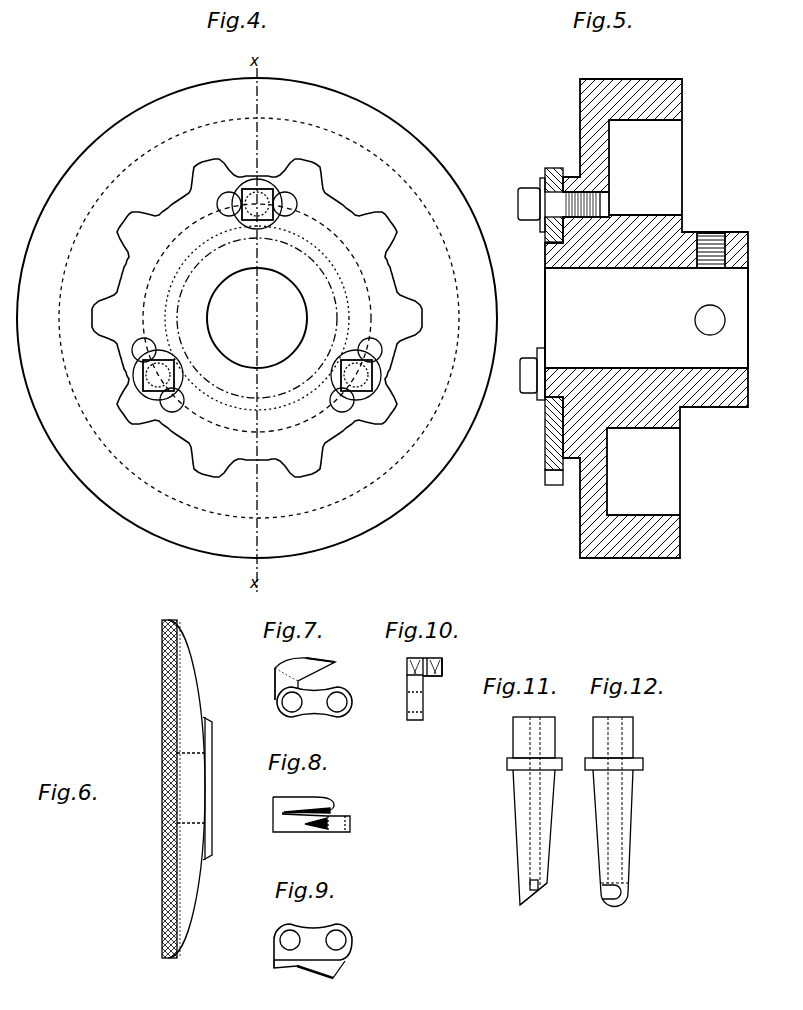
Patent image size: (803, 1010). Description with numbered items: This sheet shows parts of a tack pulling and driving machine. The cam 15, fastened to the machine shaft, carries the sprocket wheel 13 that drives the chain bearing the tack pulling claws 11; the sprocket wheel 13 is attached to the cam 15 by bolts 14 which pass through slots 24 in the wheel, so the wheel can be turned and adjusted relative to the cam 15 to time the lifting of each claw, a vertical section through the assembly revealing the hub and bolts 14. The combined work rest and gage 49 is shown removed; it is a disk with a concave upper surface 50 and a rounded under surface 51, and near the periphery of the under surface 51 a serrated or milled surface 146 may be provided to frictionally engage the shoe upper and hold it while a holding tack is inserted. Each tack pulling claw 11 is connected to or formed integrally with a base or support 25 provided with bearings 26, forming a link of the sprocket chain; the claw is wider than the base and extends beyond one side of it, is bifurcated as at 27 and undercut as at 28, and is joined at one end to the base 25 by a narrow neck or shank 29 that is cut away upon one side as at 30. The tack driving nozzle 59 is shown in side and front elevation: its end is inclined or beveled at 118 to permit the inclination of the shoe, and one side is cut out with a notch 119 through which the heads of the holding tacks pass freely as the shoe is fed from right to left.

In FIG. 7, the tack pulling claw 11 is at (312, 660).
In FIG. 8, the tack pulling claw 11 is at (310, 797).
In FIG. 9, the tack pulling claw 11 is at (309, 981).
In FIG. 10, the tack pulling claw 11 is at (440, 660).
In FIG. 4, the sprocket wheel 13 is at (257, 318).
In FIG. 5, the sprocket wheel 13 is at (545, 462).
In FIG. 4, the bolts 14 is at (143, 373).
In FIG. 5, the bolts 14 is at (520, 182).
In FIG. 4, the cam 15 is at (434, 168).
In FIG. 5, the cam 15 is at (620, 80).
In FIG. 4, the slots 24 is at (300, 203).
In FIG. 10, the slots 24 is at (407, 684).
In FIG. 7, the base or support 25 is at (338, 690).
In FIG. 8, the base or support 25 is at (350, 821).
In FIG. 9, the base or support 25 is at (314, 930).
In FIG. 10, the base or support 25 is at (417, 707).
In FIG. 7, the bearings 26 is at (283, 704).
In FIG. 9, the bearings 26 is at (280, 935).
In FIG. 10, the bearings 26 is at (423, 702).
In FIG. 8, the bifurcation 27 is at (333, 811).
In FIG. 10, the bifurcation 27 is at (425, 658).
In FIG. 7, the undercut 28 is at (336, 665).
In FIG. 9, the undercut 28 is at (343, 969).
In FIG. 10, the undercut 28 is at (442, 666).
In FIG. 7, the neck or shank 29 is at (275, 679).
In FIG. 9, the cut-away portion 30 is at (273, 961).
In FIG. 10, the cut-away portion 30 is at (427, 678).
In FIG. 6, the combined work rest and gage 49 is at (200, 888).
In FIG. 6, the concave upper surface 50 is at (162, 877).
In FIG. 6, the rounded under surface 51 is at (196, 665).
In FIG. 11, the tack driving nozzle 59 is at (549, 806).
In FIG. 12, the tack driving nozzle 59 is at (636, 807).
In FIG. 11, the beveled end 118 is at (522, 908).
In FIG. 12, the beveled end 118 is at (645, 897).
In FIG. 11, the notch 119 is at (542, 893).
In FIG. 6, the serrated or milled surface 146 is at (162, 721).